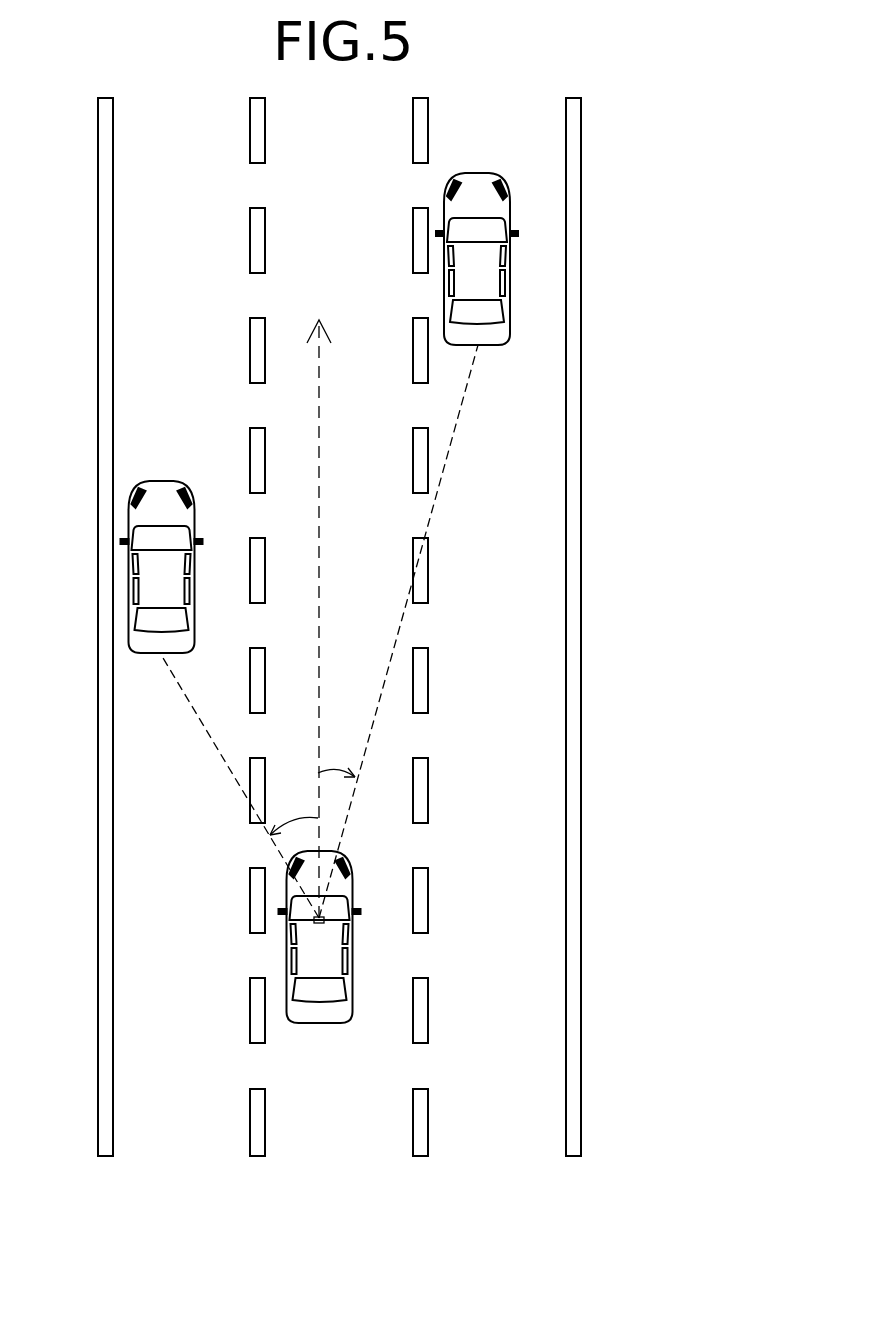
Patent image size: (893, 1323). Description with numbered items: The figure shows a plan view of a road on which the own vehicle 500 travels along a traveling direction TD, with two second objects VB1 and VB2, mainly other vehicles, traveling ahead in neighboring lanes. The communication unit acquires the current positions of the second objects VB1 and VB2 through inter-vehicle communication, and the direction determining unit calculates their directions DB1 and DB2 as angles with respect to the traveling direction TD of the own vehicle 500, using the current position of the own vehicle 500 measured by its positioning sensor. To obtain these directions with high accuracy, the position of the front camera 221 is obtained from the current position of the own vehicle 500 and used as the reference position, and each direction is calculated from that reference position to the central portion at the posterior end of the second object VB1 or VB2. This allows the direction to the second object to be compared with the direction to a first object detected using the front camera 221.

The second object VB1 is at (128, 577).
The second object VB2 is at (485, 172).
The traveling direction TD is at (320, 395).
The direction DB1 is at (266, 837).
The direction DB2 is at (364, 784).
The own vehicle 500 is at (352, 892).
The front camera 221 is at (322, 924).